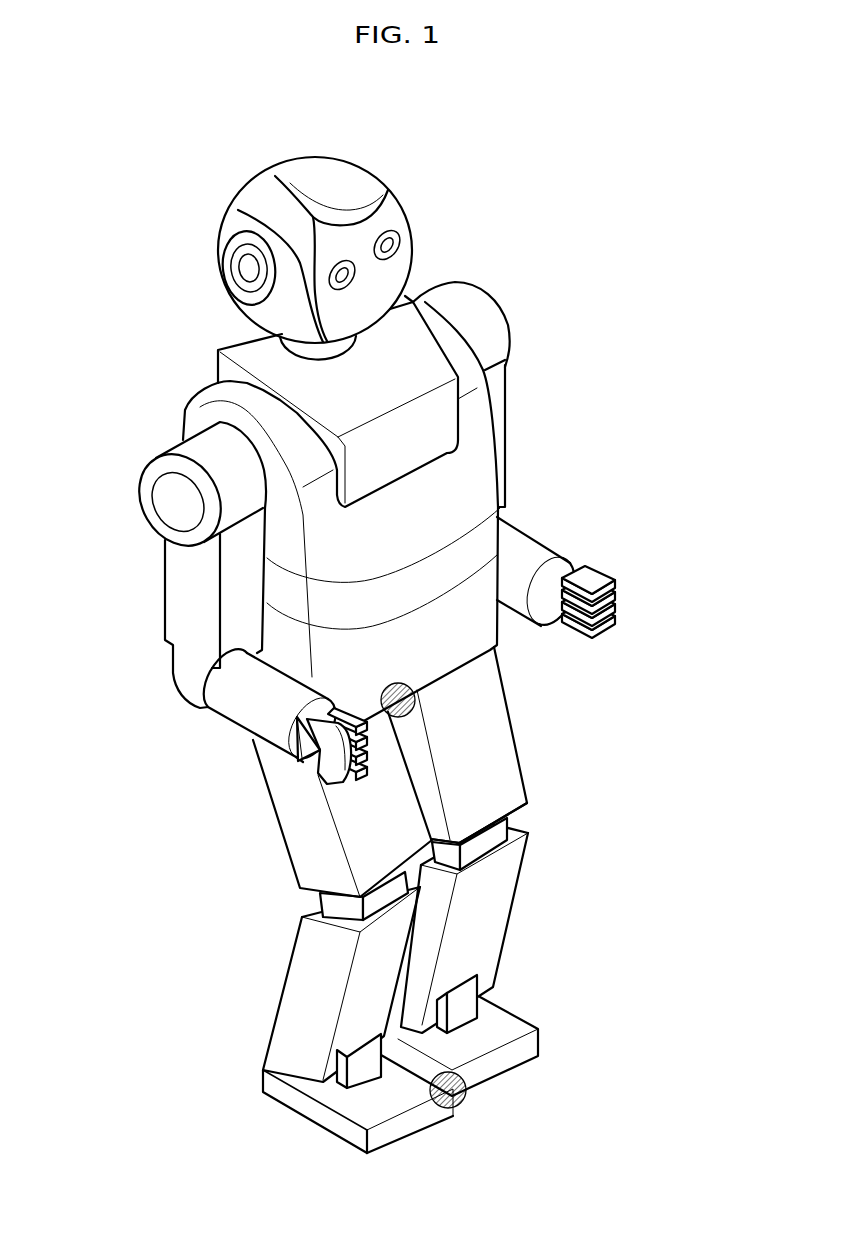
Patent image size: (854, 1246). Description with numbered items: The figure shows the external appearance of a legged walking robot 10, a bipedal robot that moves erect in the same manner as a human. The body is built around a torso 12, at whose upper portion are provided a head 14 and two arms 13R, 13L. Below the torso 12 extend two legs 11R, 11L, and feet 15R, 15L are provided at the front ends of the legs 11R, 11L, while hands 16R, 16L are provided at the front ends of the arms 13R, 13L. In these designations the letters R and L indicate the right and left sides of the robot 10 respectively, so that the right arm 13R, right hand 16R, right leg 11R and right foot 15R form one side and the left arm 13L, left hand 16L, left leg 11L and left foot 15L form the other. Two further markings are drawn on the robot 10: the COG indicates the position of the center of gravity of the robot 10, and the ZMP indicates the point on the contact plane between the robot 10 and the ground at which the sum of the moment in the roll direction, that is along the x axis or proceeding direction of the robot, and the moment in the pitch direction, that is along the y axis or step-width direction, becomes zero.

The robot 10 is at (568, 149).
The head 14 is at (410, 228).
The torso 12 is at (483, 448).
The left arm 13L is at (525, 540).
The right arm 13R is at (188, 637).
The left hand 16L is at (613, 600).
The right hand 16R is at (300, 769).
The left leg 11L is at (519, 878).
The right leg 11R is at (307, 945).
The left foot 15L is at (528, 1047).
The right foot 15R is at (320, 1108).
The center of gravity COG is at (414, 698).
The zero moment point ZMP is at (460, 1100).